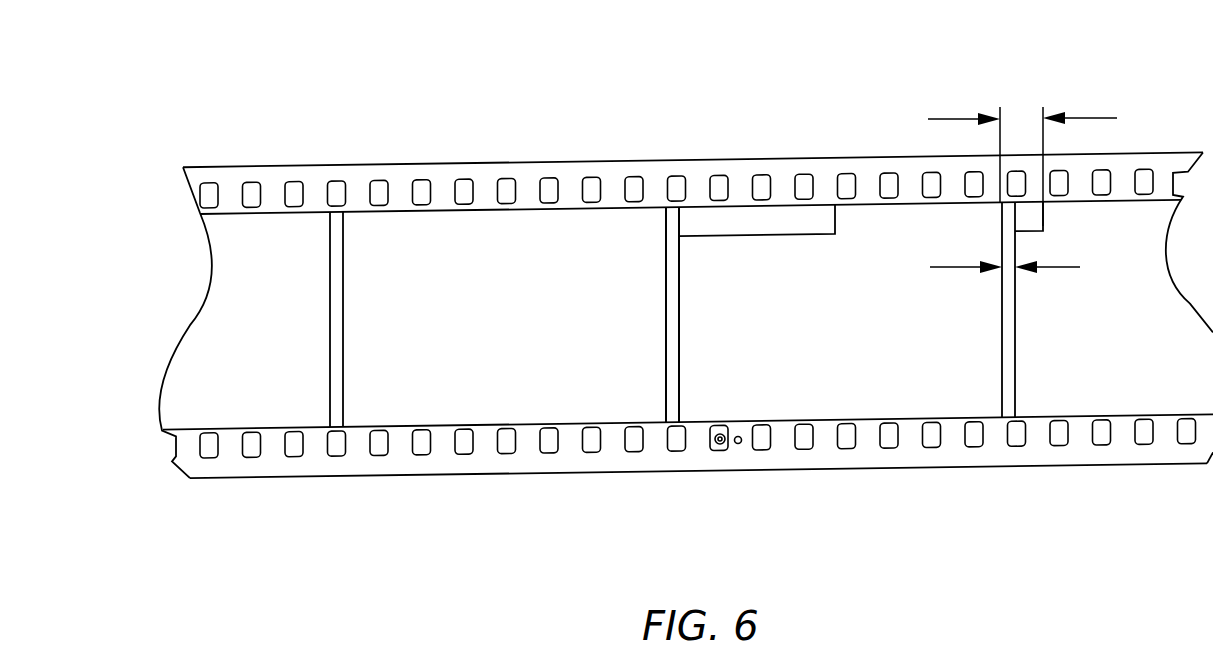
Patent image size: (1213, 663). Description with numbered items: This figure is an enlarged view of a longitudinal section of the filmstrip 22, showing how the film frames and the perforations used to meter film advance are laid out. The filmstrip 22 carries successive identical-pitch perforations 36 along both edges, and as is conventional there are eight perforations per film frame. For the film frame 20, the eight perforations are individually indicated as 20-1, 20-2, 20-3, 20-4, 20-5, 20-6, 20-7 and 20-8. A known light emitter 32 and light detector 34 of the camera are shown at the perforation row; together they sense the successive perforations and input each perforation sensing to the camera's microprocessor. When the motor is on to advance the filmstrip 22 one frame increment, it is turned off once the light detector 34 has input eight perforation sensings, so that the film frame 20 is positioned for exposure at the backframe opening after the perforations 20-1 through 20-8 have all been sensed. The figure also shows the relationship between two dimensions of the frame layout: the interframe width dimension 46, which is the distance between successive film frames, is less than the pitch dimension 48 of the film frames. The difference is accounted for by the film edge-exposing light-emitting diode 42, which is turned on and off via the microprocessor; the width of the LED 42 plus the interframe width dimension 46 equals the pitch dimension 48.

The filmstrip 22 is at (260, 115).
The perforation 36 is at (300, 185).
The film frame 20 is at (676, 311).
The film edge-exposing light-emitting diode 42 is at (1046, 212).
The pitch dimension 48 is at (948, 118).
The interframe width dimension 46 is at (1077, 268).
The perforation 20-1 is at (1016, 448).
The perforation 20-2 is at (975, 448).
The perforation 20-3 is at (931, 449).
The perforation 20-4 is at (889, 450).
The perforation 20-5 is at (848, 451).
The perforation 20-6 is at (806, 451).
The perforation 20-7 is at (765, 451).
The perforation 20-8 is at (718, 451).
The light detector 34 is at (720, 434).
The light emitter 32 is at (739, 436).